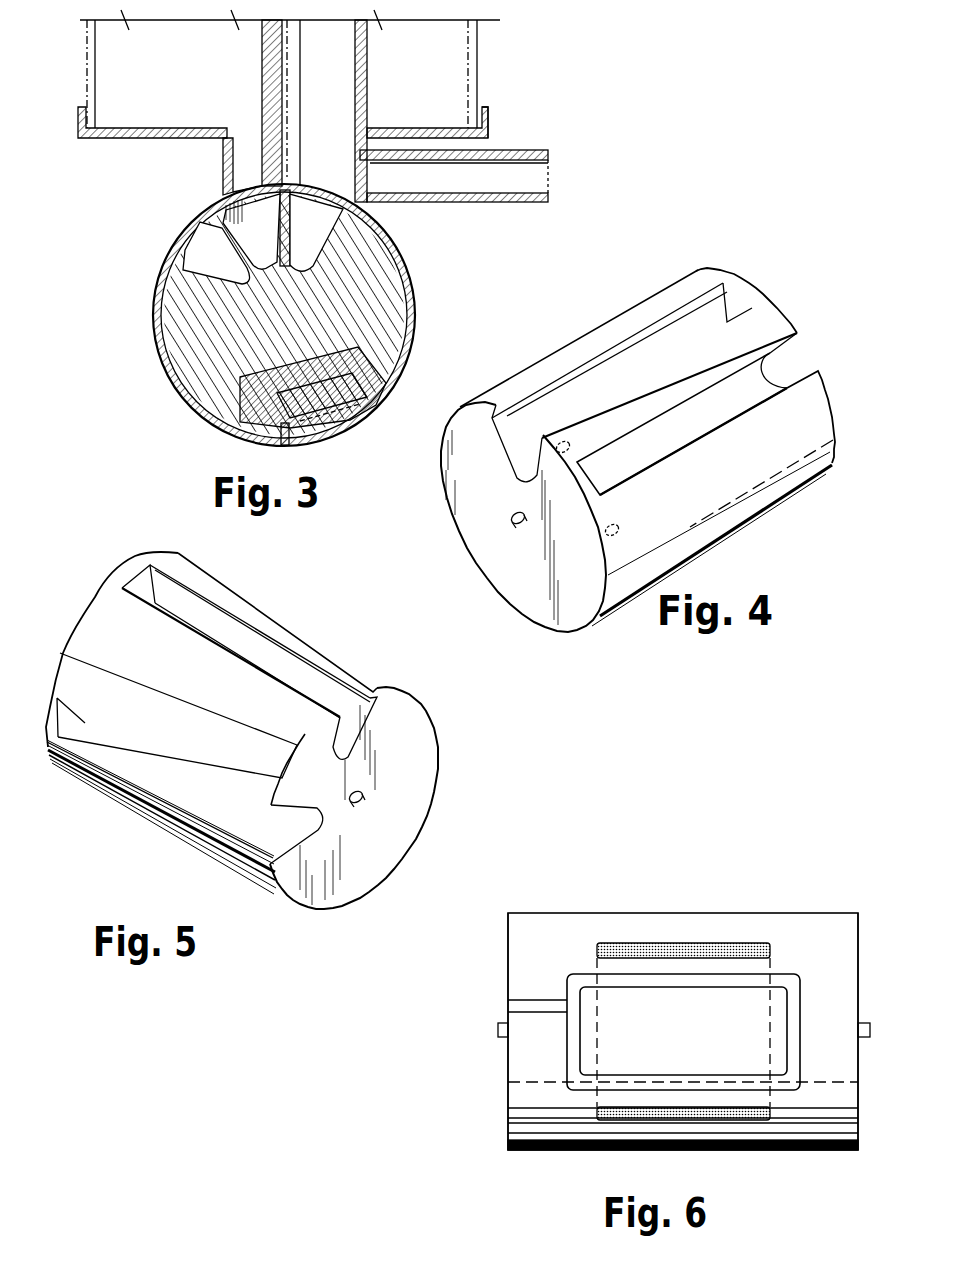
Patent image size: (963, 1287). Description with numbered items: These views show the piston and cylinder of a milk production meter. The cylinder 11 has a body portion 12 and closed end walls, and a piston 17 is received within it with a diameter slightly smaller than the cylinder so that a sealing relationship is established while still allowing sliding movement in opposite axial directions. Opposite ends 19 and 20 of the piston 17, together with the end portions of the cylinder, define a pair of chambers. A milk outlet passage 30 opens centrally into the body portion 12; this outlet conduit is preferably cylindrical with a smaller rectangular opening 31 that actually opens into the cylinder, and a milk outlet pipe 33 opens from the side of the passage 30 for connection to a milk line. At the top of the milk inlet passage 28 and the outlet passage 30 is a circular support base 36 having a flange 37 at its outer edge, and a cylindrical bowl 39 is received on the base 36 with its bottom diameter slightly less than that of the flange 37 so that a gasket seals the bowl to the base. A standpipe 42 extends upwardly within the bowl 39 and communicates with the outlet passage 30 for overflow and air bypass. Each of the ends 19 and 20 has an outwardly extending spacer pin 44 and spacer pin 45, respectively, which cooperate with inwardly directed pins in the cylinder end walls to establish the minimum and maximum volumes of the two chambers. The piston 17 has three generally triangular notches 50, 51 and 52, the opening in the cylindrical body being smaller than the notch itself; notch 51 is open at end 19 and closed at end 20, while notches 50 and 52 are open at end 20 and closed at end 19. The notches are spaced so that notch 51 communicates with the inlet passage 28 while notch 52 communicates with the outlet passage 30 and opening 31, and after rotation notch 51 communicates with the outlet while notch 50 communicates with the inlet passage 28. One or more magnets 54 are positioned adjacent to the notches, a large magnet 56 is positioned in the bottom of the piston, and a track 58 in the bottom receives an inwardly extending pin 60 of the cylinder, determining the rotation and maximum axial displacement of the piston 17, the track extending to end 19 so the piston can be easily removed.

In FIG. 3, the cylinder 11 is at (165, 241).
In FIG. 3, the body portion 12 is at (413, 268).
In FIG. 3, the piston 17 is at (185, 322).
In FIG. 4, the piston 17 is at (440, 510).
In FIG. 5, the piston 17 is at (168, 838).
In FIG. 6, the piston 17 is at (627, 905).
In FIG. 4, the end of piston 19 is at (503, 586).
In FIG. 5, the end of piston 19 is at (108, 583).
In FIG. 6, the end of piston 19 is at (508, 967).
In FIG. 4, the end of piston 20 is at (778, 309).
In FIG. 5, the end of piston 20 is at (422, 765).
In FIG. 6, the end of piston 20 is at (858, 978).
In FIG. 3, the milk inlet passage 28 is at (242, 140).
In FIG. 3, the milk outlet passage 30 is at (312, 133).
In FIG. 3, the rectangular opening 31 is at (323, 184).
In FIG. 3, the milk outlet pipe 33 is at (548, 183).
In FIG. 3, the circular support base 36 is at (432, 127).
In FIG. 3, the flange 37 is at (482, 110).
In FIG. 3, the cylindrical bowl 39 is at (478, 54).
In FIG. 3, the standpipe 42 is at (345, 60).
In FIG. 4, the spacer pin 44 is at (518, 526).
In FIG. 6, the spacer pin 44 is at (500, 1041).
In FIG. 5, the spacer pin 45 is at (358, 808).
In FIG. 6, the spacer pin 45 is at (866, 1041).
In FIG. 3, the notch 50 is at (199, 274).
In FIG. 4, the notch 50 is at (565, 347).
In FIG. 5, the notch 50 is at (235, 630).
In FIG. 3, the notch 51 is at (247, 246).
In FIG. 4, the notch 51 is at (642, 347).
In FIG. 5, the notch 51 is at (102, 662).
In FIG. 3, the notch 52 is at (296, 239).
In FIG. 4, the notch 52 is at (767, 380).
In FIG. 5, the notch 52 is at (120, 760).
In FIG. 4, the magnets 54 is at (570, 441).
In FIG. 3, the large magnet 56 is at (377, 393).
In FIG. 6, the large magnet 56 is at (707, 943).
In FIG. 3, the track 58 is at (353, 410).
In FIG. 6, the track 58 is at (702, 986).
In FIG. 3, the pin 60 is at (283, 444).